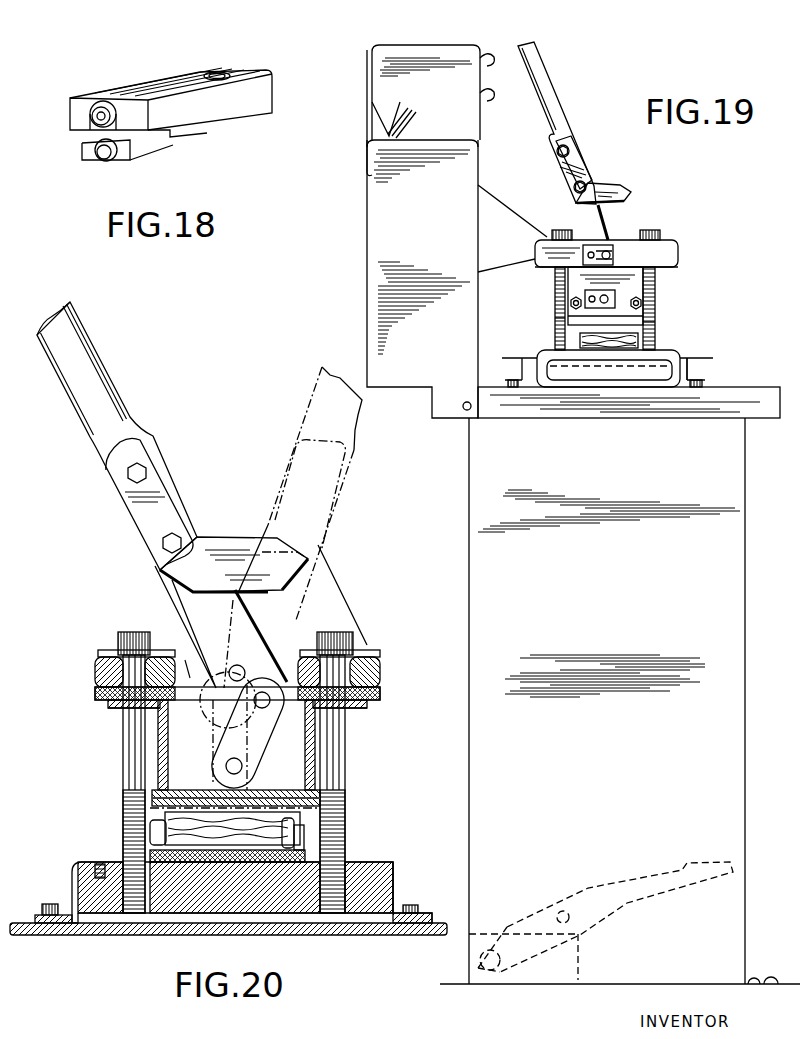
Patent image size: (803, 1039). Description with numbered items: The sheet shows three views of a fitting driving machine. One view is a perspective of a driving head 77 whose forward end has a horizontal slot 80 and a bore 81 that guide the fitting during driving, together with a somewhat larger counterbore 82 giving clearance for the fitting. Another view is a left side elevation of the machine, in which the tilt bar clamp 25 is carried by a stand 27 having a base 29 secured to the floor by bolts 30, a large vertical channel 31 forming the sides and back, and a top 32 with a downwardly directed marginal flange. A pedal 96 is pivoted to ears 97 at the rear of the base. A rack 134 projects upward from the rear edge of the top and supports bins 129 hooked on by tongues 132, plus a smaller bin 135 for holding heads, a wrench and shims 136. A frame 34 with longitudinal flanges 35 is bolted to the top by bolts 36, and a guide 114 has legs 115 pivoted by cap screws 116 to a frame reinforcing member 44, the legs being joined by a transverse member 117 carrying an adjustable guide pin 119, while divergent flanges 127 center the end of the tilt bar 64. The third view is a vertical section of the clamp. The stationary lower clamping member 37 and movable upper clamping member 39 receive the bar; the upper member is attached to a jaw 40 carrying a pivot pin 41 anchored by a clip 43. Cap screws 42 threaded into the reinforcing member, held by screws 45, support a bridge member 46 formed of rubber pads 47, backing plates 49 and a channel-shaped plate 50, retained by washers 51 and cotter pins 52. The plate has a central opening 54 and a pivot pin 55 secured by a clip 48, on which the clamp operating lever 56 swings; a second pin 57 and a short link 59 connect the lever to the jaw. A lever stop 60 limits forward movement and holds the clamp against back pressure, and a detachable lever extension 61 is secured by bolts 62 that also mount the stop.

In FIG. 19, the tilt bar clamp 25 is at (668, 300).
In FIG. 20, the tilt bar clamp 25 is at (360, 780).
In FIG. 19, the stand 27 is at (458, 518).
In FIG. 19, the base 29 is at (755, 982).
In FIG. 19, the bolts 30 is at (775, 988).
In FIG. 19, the vertical channel 31 is at (746, 745).
In FIG. 19, the top 32 is at (768, 418).
In FIG. 20, the top 32 is at (90, 936).
In FIG. 19, the frame 34 is at (540, 356).
In FIG. 20, the frame 34 is at (393, 863).
In FIG. 20, the longitudinal flanges 35 is at (430, 914).
In FIG. 19, the bolts 36 is at (702, 381).
In FIG. 20, the bolts 36 is at (411, 906).
In FIG. 20, the lower clamping member 37 is at (304, 838).
In FIG. 19, the upper clamping member 39 is at (556, 320).
In FIG. 20, the upper clamping member 39 is at (321, 798).
In FIG. 19, the jaw 40 is at (643, 288).
In FIG. 20, the jaw 40 is at (316, 748).
In FIG. 19, the pivot pin 41 is at (656, 322).
In FIG. 20, the pivot pin 41 is at (244, 767).
In FIG. 19, the cap screws 42 is at (655, 230).
In FIG. 20, the cap screws 42 is at (346, 766).
In FIG. 19, the clip 43 is at (590, 296).
In FIG. 20, the frame reinforcing member 44 is at (393, 882).
In FIG. 20, the screws 45 is at (100, 866).
In FIG. 19, the bridge member 46 is at (688, 249).
In FIG. 20, the bridge member 46 is at (383, 650).
In FIG. 20, the rubber pads 47 is at (379, 672).
In FIG. 19, the clip 48 is at (608, 240).
In FIG. 20, the backing plates 49 is at (378, 656).
In FIG. 19, the channel-shaped plate 50 is at (680, 262).
In FIG. 20, the channel-shaped plate 50 is at (380, 693).
In FIG. 20, the washers 51 is at (368, 704).
In FIG. 20, the cotter pins 52 is at (356, 709).
In FIG. 20, the central opening 54 is at (190, 677).
In FIG. 19, the pivot pin 55 is at (612, 256).
In FIG. 20, the pivot pin 55 is at (232, 666).
In FIG. 19, the clamp operating lever 56 is at (612, 210).
In FIG. 20, the clamp operating lever 56 is at (158, 590).
In FIG. 20, the second pin 57 is at (268, 712).
In FIG. 20, the short link 59 is at (222, 740).
In FIG. 19, the lever stop 60 is at (618, 185).
In FIG. 20, the lever stop 60 is at (232, 547).
In FIG. 19, the lever extension 61 is at (552, 108).
In FIG. 20, the lever extension 61 is at (113, 392).
In FIG. 19, the bolts 62 is at (587, 181).
In FIG. 20, the bolts 62 is at (178, 533).
In FIG. 19, the tilt bar 64 is at (640, 342).
In FIG. 20, the tilt bar 64 is at (165, 826).
In FIG. 18, the driving head 77 is at (250, 125).
In FIG. 18, the horizontal slot 80 is at (160, 136).
In FIG. 18, the bore 81 is at (105, 103).
In FIG. 18, the counterbore 82 is at (96, 106).
In FIG. 19, the pedal 96 is at (640, 915).
In FIG. 19, the ears 97 is at (578, 963).
In FIG. 19, the guide 114 is at (712, 362).
In FIG. 19, the legs 115 is at (512, 360).
In FIG. 19, the cap screws 116 is at (692, 387).
In FIG. 19, the transverse member 117 is at (588, 364).
In FIG. 19, the guide pin 119 is at (560, 348).
In FIG. 20, the divergent flanges 127 is at (298, 830).
In FIG. 19, the bins 129 is at (430, 50).
In FIG. 19, the tongues 132 is at (367, 153).
In FIG. 19, the rack 134 is at (372, 262).
In FIG. 19, the bin 135 is at (372, 128).
In FIG. 19, the shims 136 is at (412, 110).
In FIG. 20, the shims 136 is at (305, 856).